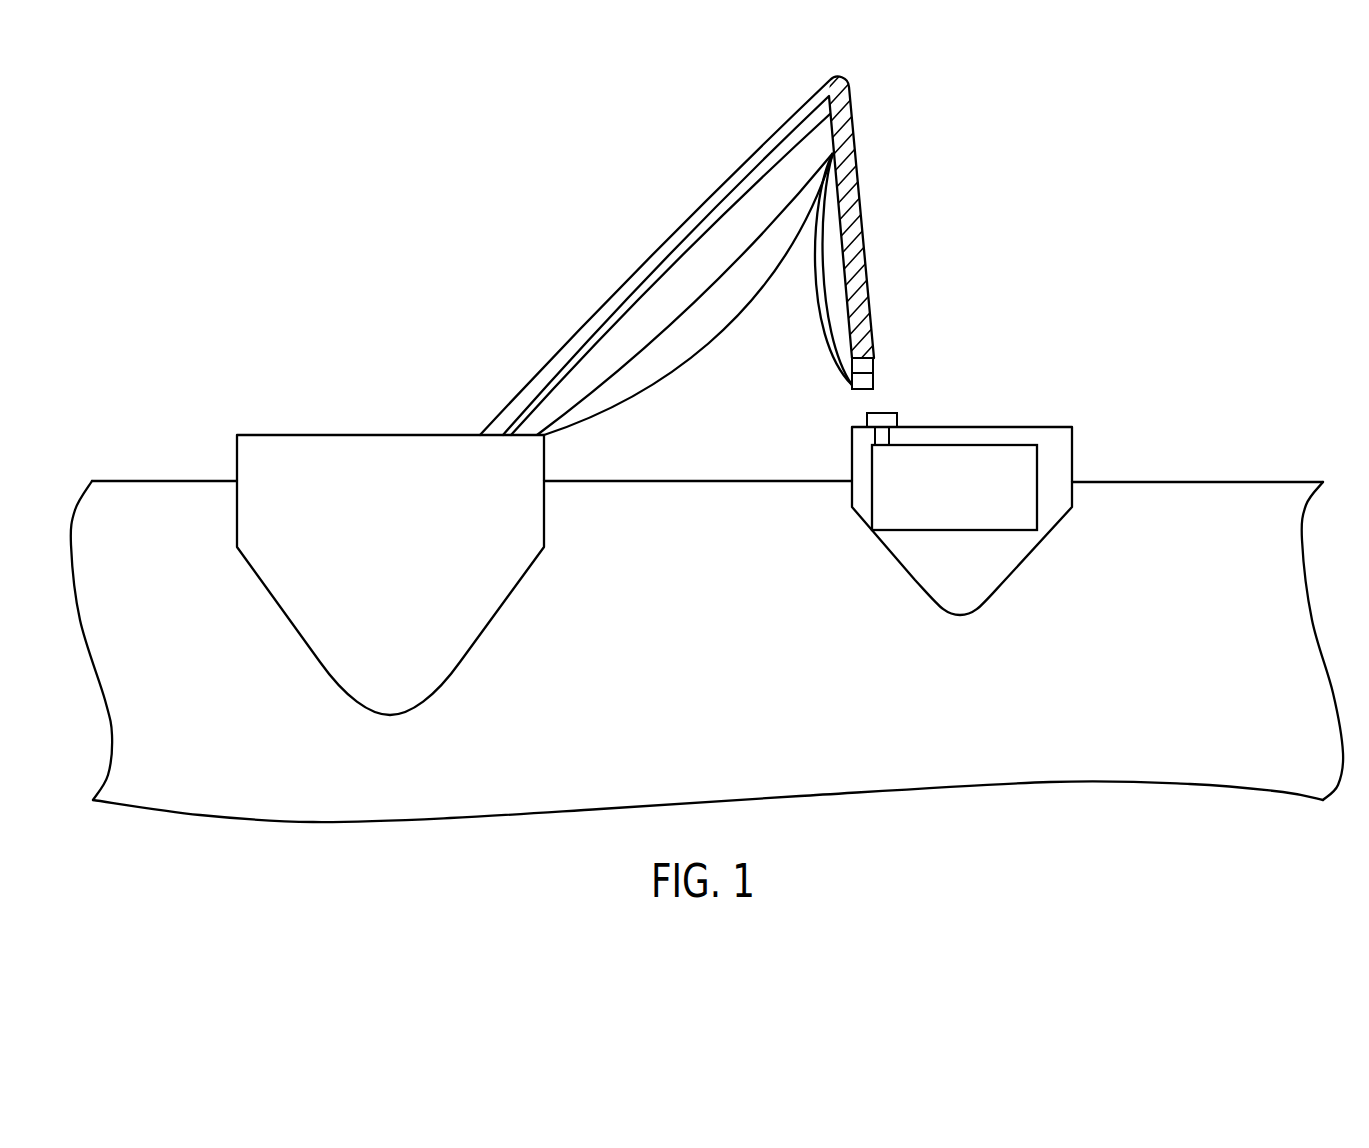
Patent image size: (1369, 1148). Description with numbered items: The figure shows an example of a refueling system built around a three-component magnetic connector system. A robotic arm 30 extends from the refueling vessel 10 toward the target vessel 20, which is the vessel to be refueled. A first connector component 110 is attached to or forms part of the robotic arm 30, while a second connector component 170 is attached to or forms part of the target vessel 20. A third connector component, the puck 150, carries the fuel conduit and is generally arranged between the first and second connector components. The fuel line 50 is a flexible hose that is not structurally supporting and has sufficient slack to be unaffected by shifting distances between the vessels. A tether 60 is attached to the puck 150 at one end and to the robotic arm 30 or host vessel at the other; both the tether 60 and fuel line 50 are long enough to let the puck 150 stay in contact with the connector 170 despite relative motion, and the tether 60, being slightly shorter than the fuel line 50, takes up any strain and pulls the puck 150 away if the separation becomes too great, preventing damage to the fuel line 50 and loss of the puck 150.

The refueling vessel 10 is at (509, 606).
The target vessel 20 is at (1023, 565).
The robotic arm 30 is at (668, 246).
The fuel line 50 is at (657, 342).
The tether 60 is at (707, 337).
The first connector component 110 is at (867, 367).
The puck 150 is at (868, 383).
The second connector component 170 is at (893, 420).